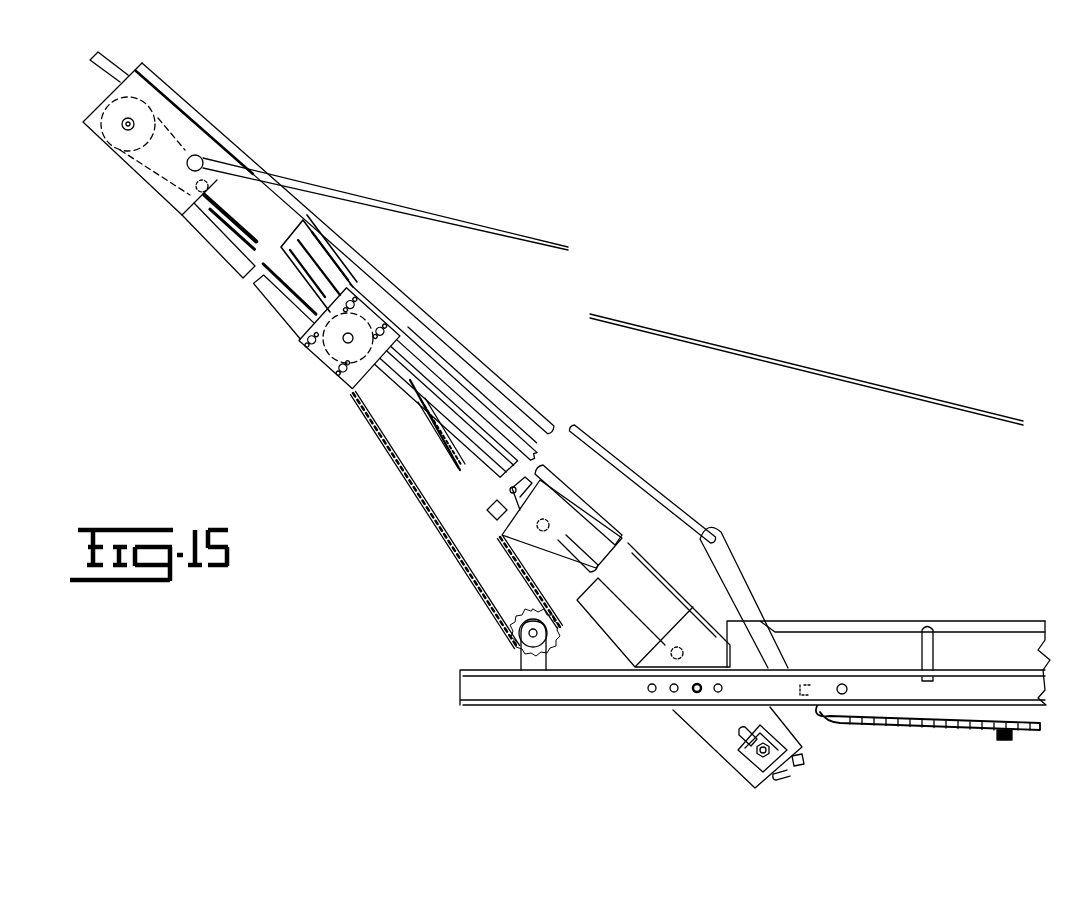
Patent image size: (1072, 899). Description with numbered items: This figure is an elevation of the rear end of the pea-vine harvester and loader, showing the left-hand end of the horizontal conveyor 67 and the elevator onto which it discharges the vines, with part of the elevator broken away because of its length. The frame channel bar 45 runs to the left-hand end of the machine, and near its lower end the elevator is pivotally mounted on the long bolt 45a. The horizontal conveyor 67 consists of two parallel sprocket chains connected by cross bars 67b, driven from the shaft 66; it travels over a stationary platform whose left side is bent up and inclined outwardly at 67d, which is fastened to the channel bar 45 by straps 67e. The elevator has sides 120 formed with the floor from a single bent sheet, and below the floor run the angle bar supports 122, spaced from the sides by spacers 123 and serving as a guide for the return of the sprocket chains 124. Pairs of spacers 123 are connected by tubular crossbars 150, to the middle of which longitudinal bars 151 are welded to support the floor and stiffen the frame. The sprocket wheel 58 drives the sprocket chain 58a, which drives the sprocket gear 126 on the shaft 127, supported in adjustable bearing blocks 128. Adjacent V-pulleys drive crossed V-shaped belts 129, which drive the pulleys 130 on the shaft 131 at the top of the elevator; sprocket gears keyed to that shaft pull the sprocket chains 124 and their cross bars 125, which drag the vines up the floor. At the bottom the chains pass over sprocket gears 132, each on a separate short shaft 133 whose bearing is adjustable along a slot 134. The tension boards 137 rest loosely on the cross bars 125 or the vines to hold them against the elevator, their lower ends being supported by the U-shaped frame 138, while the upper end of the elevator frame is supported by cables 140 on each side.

The pulleys 130 is at (100, 138).
The shaft 131 is at (126, 122).
The tension boards 137 is at (118, 67).
The cables 140 is at (445, 212).
The angle bar supports 122 is at (223, 252).
The V-shaped belts 129 is at (270, 278).
The sides of the elevator 120 is at (313, 258).
The blocks 128 is at (310, 325).
The shaft 127 is at (343, 340).
The sprocket gear 126 is at (322, 368).
The bars 151 is at (470, 447).
The tubular crossbars 150 is at (587, 505).
The spacers 123 is at (512, 530).
The sprocket chain 58a is at (408, 475).
The sprocket wheel 58 is at (520, 628).
The U-shaped frame 138 is at (735, 555).
The channel bar 45 is at (542, 697).
The long bolt 45a is at (693, 688).
The shaft 66 is at (849, 689).
The upturned part of platform 67d is at (962, 625).
The straps 67e is at (936, 650).
The horizontal conveyor 67 is at (953, 723).
The cross bars 67b is at (1002, 742).
The sprocket gears 132 is at (780, 778).
The short shaft 133 is at (758, 750).
The slot 134 is at (740, 732).
The cross bars 125 is at (805, 761).
The sprocket chains 124 is at (782, 778).